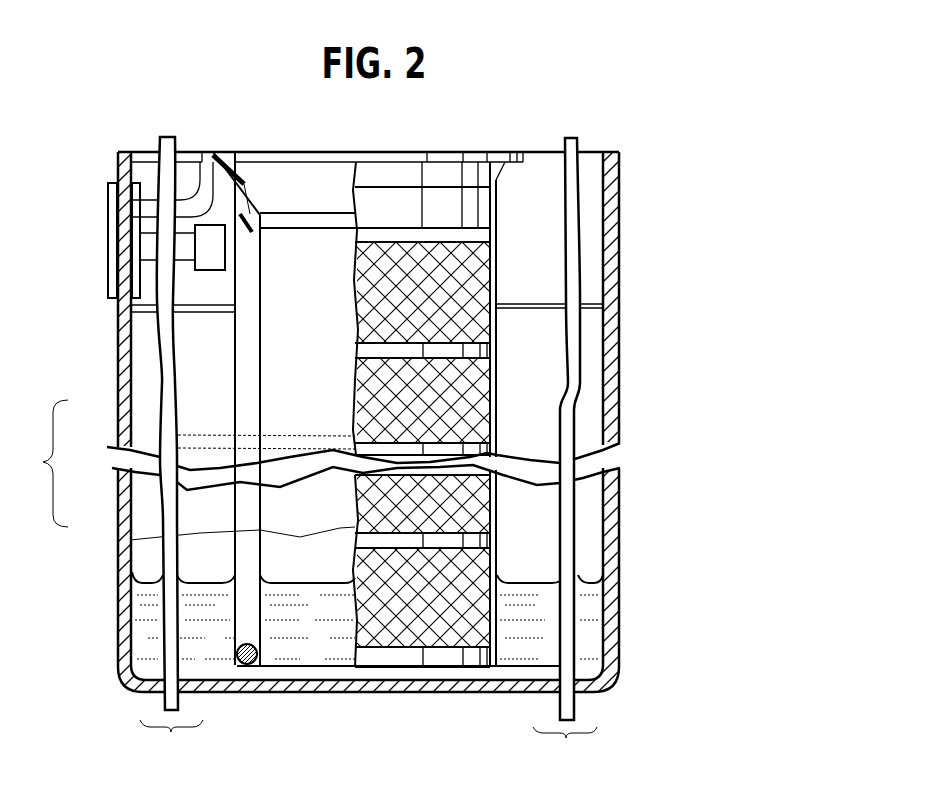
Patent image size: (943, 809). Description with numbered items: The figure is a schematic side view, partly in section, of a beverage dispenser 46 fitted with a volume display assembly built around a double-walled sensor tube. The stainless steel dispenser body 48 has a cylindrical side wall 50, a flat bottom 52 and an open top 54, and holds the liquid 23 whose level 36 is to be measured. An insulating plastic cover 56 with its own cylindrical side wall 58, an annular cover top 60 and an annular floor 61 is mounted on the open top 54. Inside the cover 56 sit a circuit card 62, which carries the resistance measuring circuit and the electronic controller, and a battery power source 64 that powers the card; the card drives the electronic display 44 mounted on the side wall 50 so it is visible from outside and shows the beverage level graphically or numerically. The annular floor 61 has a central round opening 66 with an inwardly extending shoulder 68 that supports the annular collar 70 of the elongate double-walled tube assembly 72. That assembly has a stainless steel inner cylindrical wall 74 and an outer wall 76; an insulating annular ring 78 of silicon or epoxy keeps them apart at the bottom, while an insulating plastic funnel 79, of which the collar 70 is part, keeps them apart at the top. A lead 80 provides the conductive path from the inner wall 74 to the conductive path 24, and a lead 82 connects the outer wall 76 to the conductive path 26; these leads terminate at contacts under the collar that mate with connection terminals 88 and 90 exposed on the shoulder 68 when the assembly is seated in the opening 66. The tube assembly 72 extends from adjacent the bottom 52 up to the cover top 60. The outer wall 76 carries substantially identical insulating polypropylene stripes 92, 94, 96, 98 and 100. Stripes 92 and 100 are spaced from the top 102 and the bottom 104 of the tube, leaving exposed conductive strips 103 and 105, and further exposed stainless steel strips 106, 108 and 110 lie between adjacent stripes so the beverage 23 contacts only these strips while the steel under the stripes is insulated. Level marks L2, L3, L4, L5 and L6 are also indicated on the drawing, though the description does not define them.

The liquid 23 is at (150, 647).
The conductive path 24 is at (157, 202).
The conductive path 26 is at (157, 218).
The level of the liquid 36 is at (132, 572).
The electronic display 44 is at (112, 257).
The beverage dispenser 46 is at (636, 173).
The dispenser body 48 is at (587, 282).
The cylindrical side wall 50 is at (597, 390).
The flat bottom 52 is at (410, 697).
The open top 54 is at (597, 296).
The plastic cover 56 is at (585, 165).
The cylindrical side wall 58 is at (590, 238).
The annular cover top 60 is at (537, 150).
The annular floor 61 is at (585, 320).
The circuit card 62 is at (143, 273).
The battery power source 64 is at (210, 255).
The central round opening 66 is at (205, 158).
The shoulder 68 is at (530, 200).
The annular collar 70 is at (440, 157).
The tube assembly 72 is at (545, 228).
The inner cylindrical wall 74 is at (257, 353).
The outer wall 76 is at (223, 378).
The insulating annular ring 78 is at (240, 667).
The insulating plastic funnel 79 is at (275, 205).
The lead 80 is at (262, 283).
The lead 82 is at (380, 228).
The connection terminal 88 is at (197, 160).
The connection terminal 90 is at (258, 200).
The insulating stripe 92 is at (545, 570).
The insulating stripe 94 is at (497, 515).
The insulating stripe 96 is at (560, 462).
The insulating stripe 98 is at (575, 400).
The insulating stripe 100 is at (497, 278).
The top of the tube 102 is at (507, 160).
The conductive strip 103 is at (422, 163).
The bottom of the tube 104 is at (377, 673).
The conductive strip 105 is at (477, 662).
The conductive strip 106 is at (540, 520).
The conductive strip 108 is at (575, 432).
The conductive strip 110 is at (590, 343).
The liquid level L2 is at (147, 583).
The liquid level L3 is at (130, 540).
The liquid level L4 is at (160, 447).
The liquid level L5 is at (178, 435).
The liquid level L6 is at (355, 358).